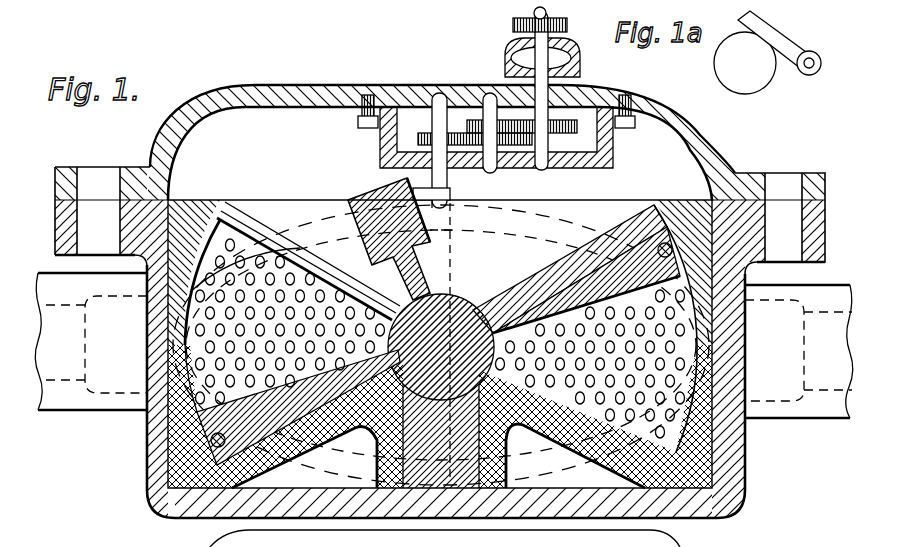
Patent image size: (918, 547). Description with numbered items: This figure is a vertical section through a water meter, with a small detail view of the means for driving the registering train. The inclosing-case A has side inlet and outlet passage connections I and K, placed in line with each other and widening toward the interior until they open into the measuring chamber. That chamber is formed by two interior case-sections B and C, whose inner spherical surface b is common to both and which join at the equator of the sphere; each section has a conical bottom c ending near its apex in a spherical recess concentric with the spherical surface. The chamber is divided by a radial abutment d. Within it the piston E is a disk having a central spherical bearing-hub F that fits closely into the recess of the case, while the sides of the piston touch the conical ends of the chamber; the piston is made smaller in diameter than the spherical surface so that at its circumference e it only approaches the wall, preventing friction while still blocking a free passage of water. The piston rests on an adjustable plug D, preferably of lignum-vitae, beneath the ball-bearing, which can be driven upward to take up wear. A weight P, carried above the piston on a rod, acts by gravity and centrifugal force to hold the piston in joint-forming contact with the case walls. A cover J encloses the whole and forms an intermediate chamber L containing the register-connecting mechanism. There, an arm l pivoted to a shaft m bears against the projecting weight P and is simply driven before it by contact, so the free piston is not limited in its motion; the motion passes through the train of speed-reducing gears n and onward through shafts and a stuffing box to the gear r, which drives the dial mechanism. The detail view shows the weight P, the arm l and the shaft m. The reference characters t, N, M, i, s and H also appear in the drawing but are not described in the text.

In FIG. 1, the inclosing-case A is at (440, 342).
In FIG. 1, the cover J is at (442, 142).
In FIG. 1, the chamber L is at (440, 185).
In FIG. 1, the interior case-section B is at (440, 272).
In FIG. 1, the spherical surface b is at (441, 328).
In FIG. 1, the conical bottom c is at (442, 267).
In FIG. 1, the interior case-section C is at (440, 416).
In FIG. 1, the adjustable plug D is at (441, 347).
In FIG. 1, the weight P is at (421, 331).
In FIG. 1A, the weight P is at (745, 63).
In FIG. 1, the piston E is at (586, 280).
In FIG. 1, the spherical bearing-hub F is at (298, 407).
In FIG. 1, the piston circumference e is at (178, 427).
In FIG. 1, the arch rib t is at (438, 456).
In FIG. 1, the sieve N is at (287, 321).
In FIG. 1, the sieve M is at (590, 364).
In FIG. 1, the radial abutment d is at (441, 341).
In FIG. 1, the shaft m is at (450, 266).
In FIG. 1A, the shaft m is at (821, 64).
In FIG. 1, the pin i is at (455, 150).
In FIG. 1, the train of gears n is at (496, 137).
In FIG. 1, the bushing s is at (542, 57).
In FIG. 1, the gear r is at (545, 88).
In FIG. 1, the outlet passage connection K is at (80, 345).
In FIG. 1, the inlet passage connection I is at (855, 352).
In FIG. 1, the base H is at (445, 538).
In FIG. 1A, the arm l is at (775, 32).